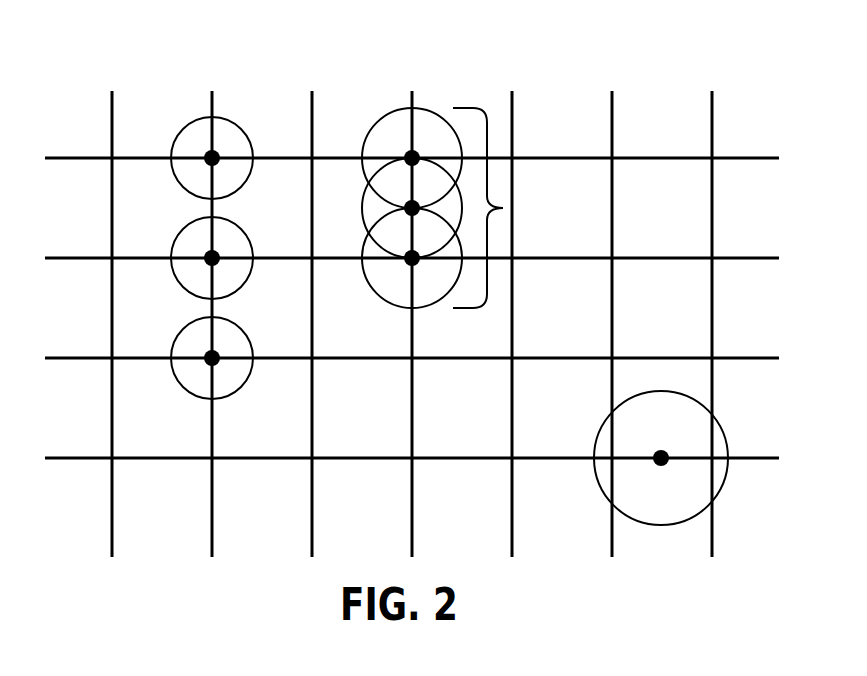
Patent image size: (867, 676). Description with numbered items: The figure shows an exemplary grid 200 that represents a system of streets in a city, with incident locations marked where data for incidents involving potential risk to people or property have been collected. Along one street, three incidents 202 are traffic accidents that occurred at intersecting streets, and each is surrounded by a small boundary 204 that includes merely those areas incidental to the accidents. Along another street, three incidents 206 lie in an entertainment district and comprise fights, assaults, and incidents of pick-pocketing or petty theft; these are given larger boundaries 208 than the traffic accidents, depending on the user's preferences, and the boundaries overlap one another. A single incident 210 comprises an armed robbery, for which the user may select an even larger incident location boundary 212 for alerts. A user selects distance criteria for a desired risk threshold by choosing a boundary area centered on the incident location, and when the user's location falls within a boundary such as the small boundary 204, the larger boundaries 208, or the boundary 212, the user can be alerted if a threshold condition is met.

The grid 200 is at (240, 52).
The incident locations 202 is at (212, 158).
The small boundary 204 is at (238, 123).
The incidents 206 is at (412, 158).
The larger boundaries 208 is at (507, 208).
The incident 210 is at (661, 458).
The incident location boundary 212 is at (723, 433).